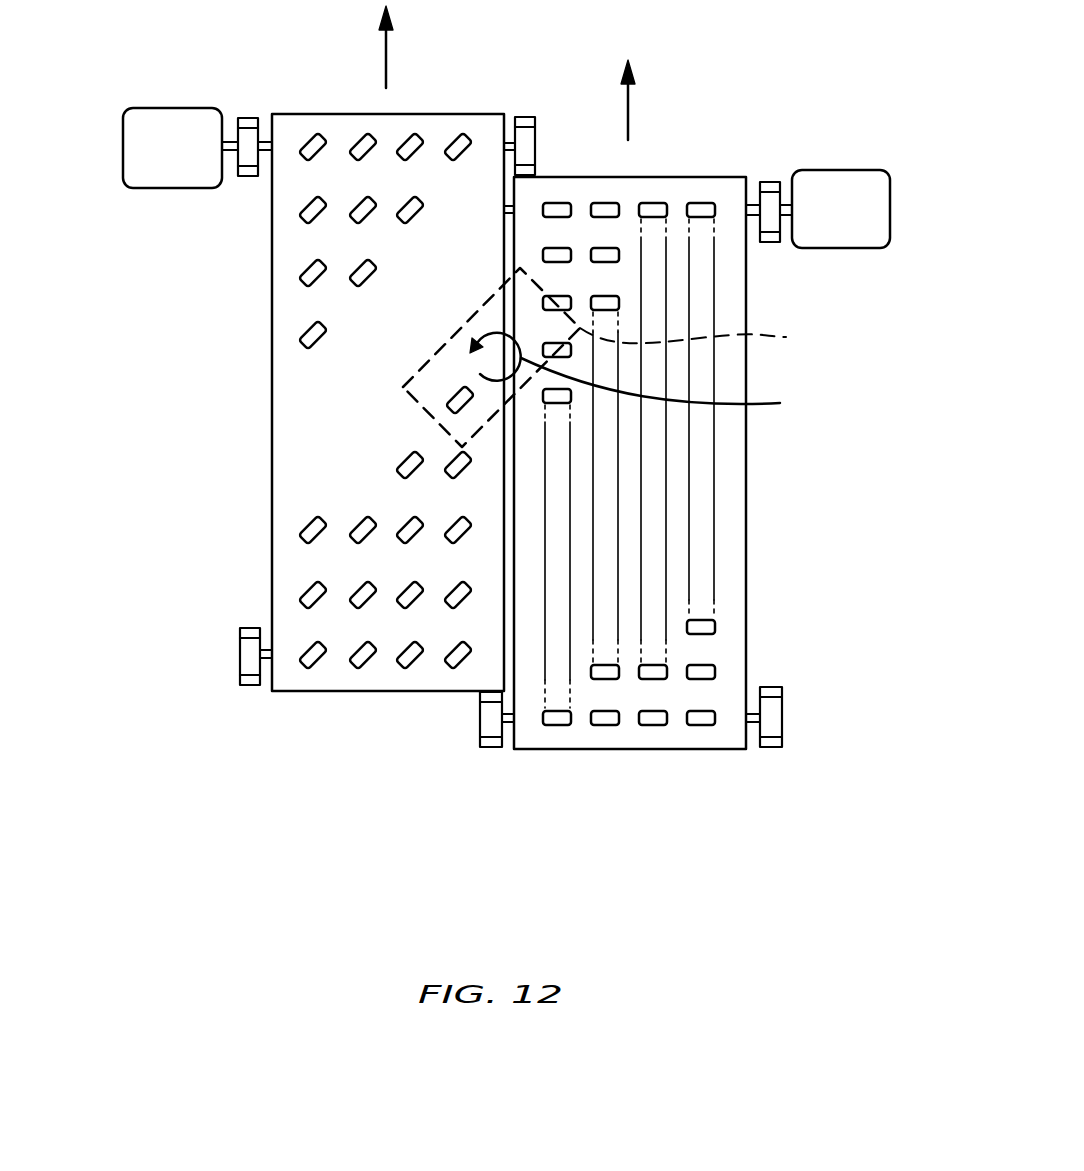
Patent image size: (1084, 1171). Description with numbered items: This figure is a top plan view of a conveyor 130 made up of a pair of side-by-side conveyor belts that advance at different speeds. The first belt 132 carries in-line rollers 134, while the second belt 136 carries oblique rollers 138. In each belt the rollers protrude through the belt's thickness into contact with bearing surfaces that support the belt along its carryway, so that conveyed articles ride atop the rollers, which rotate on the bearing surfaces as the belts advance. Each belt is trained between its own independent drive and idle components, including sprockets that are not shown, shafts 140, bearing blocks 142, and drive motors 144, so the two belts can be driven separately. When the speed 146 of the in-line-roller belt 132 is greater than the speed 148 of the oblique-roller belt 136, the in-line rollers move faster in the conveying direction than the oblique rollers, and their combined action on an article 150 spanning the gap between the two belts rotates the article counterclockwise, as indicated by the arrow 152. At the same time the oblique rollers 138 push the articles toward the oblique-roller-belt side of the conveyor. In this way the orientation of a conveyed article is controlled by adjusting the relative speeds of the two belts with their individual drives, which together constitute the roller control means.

The conveyor 130 is at (148, 403).
The first belt 132 is at (735, 447).
The in-line rollers 134 is at (703, 628).
The second belt 136 is at (293, 450).
The oblique rollers 138 is at (303, 333).
The shafts 140 is at (522, 116).
The bearing blocks 142 is at (249, 116).
The drive motors 144 is at (178, 186).
The speed of the in-line-roller belt 146 is at (632, 90).
The speed of the oblique-roller belt 148 is at (388, 55).
The article 150 is at (624, 357).
The arrow 152 is at (654, 373).